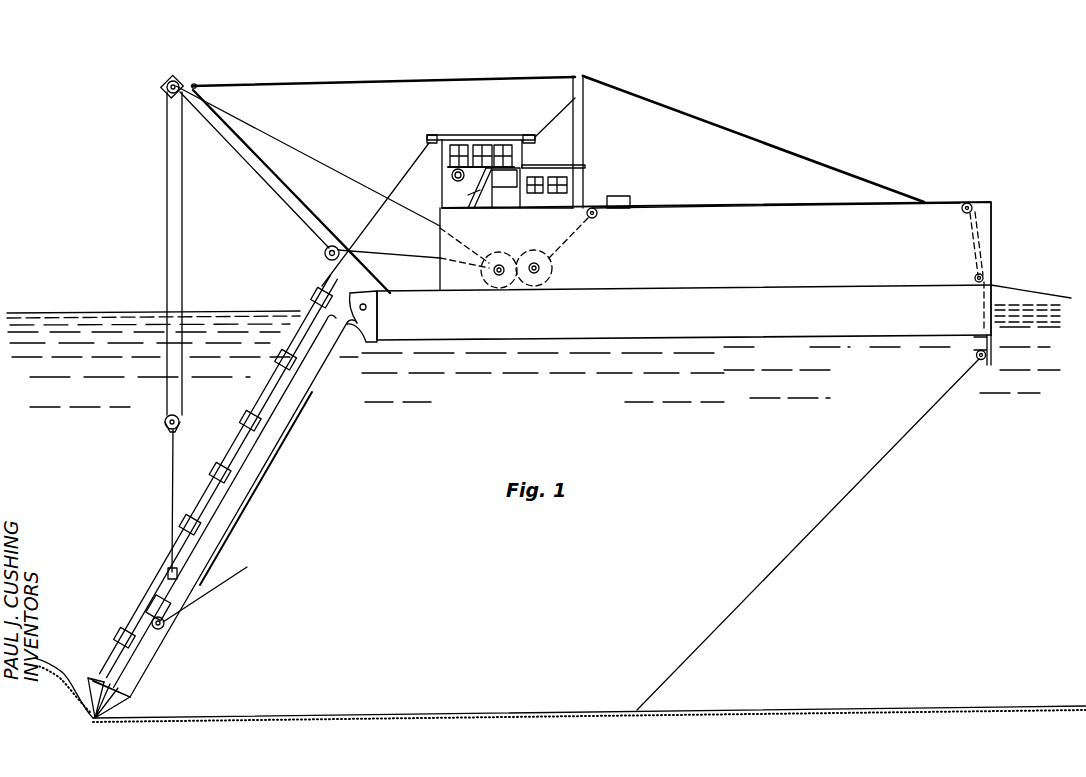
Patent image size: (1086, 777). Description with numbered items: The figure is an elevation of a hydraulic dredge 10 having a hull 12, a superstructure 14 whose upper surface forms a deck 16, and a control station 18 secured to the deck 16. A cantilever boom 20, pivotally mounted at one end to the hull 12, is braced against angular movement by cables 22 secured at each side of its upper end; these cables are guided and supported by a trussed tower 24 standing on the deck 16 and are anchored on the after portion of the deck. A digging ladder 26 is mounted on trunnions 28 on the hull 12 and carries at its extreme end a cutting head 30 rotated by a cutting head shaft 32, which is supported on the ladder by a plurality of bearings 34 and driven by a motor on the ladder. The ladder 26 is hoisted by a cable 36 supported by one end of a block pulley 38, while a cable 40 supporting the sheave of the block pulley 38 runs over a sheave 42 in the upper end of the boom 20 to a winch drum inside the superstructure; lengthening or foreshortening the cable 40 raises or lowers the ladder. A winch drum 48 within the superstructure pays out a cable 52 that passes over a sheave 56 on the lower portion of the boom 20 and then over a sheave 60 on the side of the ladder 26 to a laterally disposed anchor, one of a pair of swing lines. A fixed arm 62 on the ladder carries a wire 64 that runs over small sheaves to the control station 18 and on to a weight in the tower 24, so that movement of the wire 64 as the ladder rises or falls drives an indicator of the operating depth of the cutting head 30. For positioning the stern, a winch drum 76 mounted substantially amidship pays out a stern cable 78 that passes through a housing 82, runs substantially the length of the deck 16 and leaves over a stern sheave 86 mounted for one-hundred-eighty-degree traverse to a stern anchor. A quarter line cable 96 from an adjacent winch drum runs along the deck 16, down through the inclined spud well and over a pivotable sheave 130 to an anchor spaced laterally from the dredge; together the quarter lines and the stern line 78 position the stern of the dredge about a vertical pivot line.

The hydraulic dredge 10 is at (929, 223).
The hull 12 is at (814, 328).
The superstructure 14 is at (787, 274).
The deck 16 is at (714, 209).
The control station 18 is at (462, 136).
The cantilever boom 20 is at (276, 194).
The cables 22 is at (419, 80).
The trussed tower 24 is at (584, 141).
The digging ladder 26 is at (278, 449).
The trunnions 28 is at (364, 330).
The cutting head 30 is at (93, 680).
The cutting head shaft 32 is at (153, 607).
The bearings 34 is at (130, 638).
The cable 36 is at (171, 510).
The block pulley 38 is at (164, 423).
The cable 40 is at (165, 255).
The sheave 42 is at (178, 78).
The winch drum 48 is at (505, 253).
The cable 52 is at (394, 252).
The sheave 56 is at (325, 256).
The sheave 60 is at (167, 627).
The fixed arm 62 is at (312, 392).
The wire 64 is at (404, 174).
The winch drum 76 is at (552, 270).
The cable 78 is at (657, 204).
The housing 82 is at (621, 196).
The sheave 86 is at (986, 276).
The cable 96 is at (893, 445).
The pivotable sheave 130 is at (977, 356).